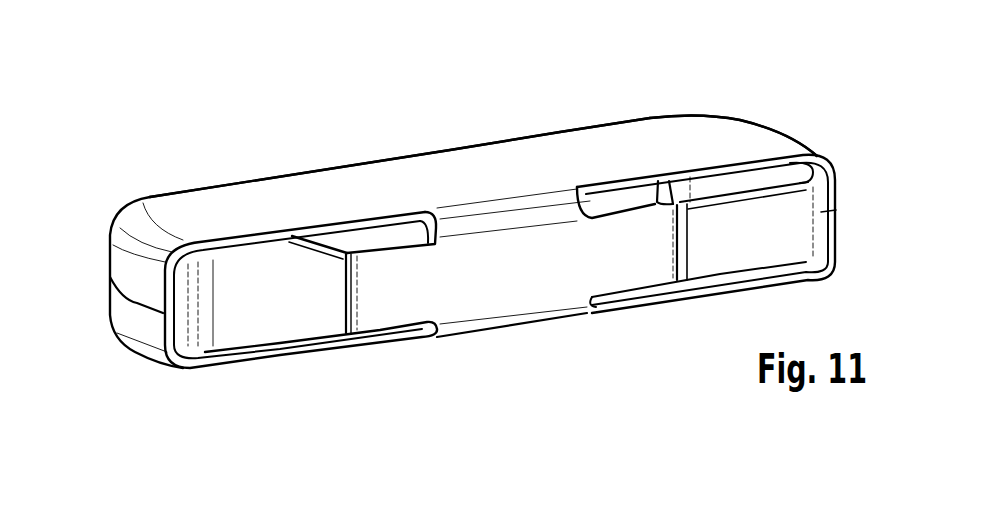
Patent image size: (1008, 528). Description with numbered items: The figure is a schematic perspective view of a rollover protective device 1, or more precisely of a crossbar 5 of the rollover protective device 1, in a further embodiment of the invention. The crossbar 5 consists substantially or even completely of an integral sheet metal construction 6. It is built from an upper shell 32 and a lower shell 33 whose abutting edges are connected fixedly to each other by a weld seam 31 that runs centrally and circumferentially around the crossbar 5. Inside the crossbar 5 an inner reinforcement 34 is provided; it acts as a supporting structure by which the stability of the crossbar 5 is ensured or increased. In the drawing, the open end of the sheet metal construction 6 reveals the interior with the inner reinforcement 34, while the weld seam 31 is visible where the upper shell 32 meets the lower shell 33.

The rollover protective device 1 is at (819, 72).
The crossbar 5 is at (208, 174).
The integral sheet metal construction 6 is at (740, 128).
The weld seam 31 is at (132, 302).
The upper shell 32 is at (463, 160).
The lower shell 33 is at (628, 307).
The inner reinforcement 34 is at (274, 317).